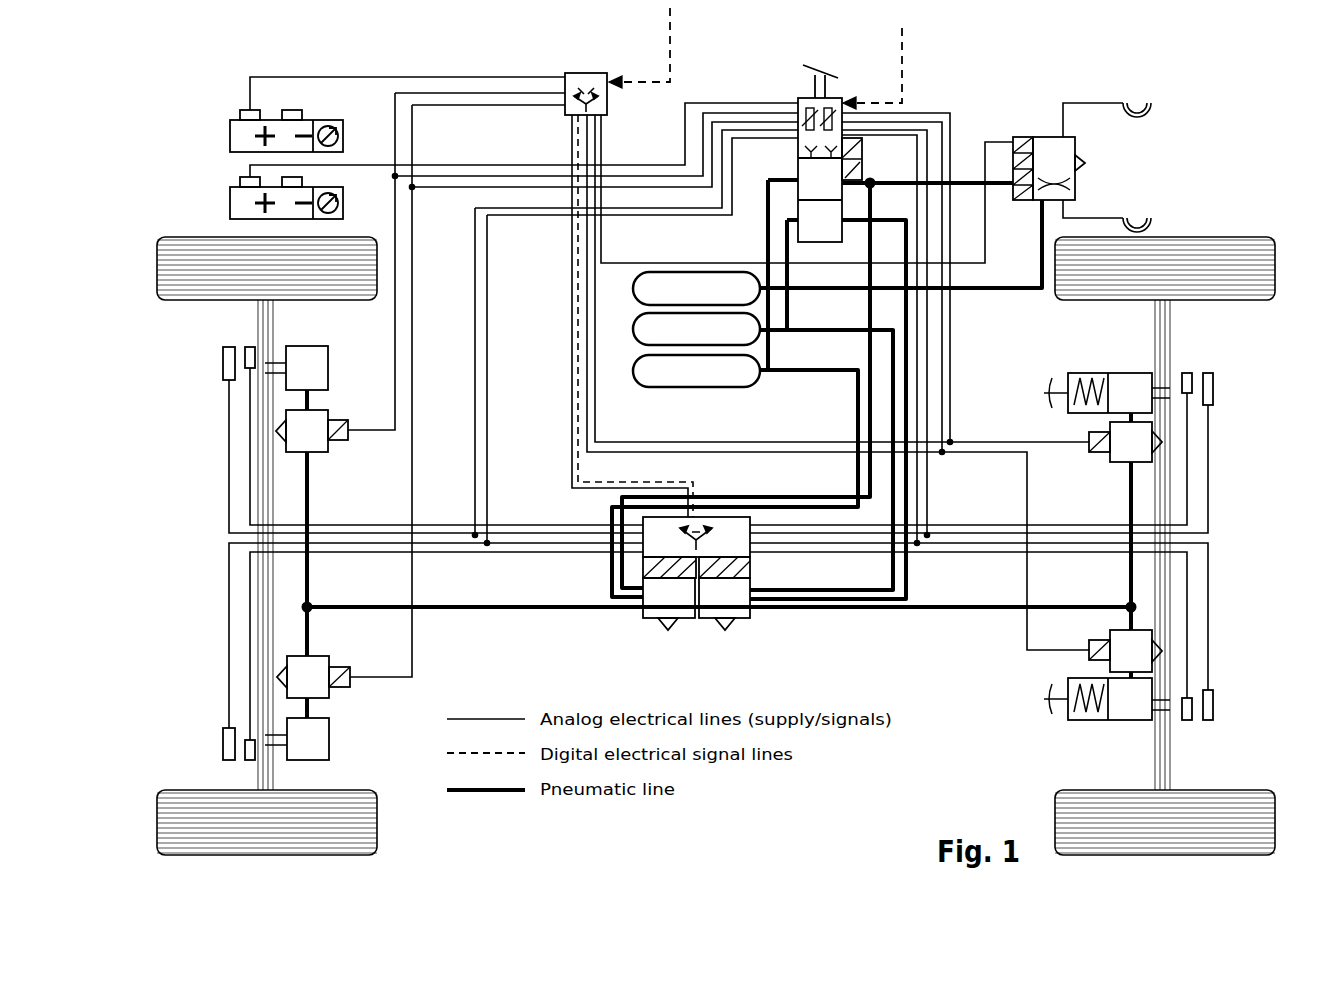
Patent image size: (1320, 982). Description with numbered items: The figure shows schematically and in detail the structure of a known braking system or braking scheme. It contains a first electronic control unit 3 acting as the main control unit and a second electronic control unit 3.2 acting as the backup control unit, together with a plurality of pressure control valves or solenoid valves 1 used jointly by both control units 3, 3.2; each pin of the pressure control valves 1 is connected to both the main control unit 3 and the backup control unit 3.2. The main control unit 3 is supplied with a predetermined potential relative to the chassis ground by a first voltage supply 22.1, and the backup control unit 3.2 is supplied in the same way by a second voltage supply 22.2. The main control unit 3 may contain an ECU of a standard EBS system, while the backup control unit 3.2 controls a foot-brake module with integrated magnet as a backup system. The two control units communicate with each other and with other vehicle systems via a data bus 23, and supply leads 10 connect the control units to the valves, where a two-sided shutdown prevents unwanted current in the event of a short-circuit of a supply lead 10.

The pressure control valves 1 is at (290, 466).
The first electronic control unit 3 is at (616, 93).
The second electronic control unit 3.2 is at (852, 100).
The supply leads 10 is at (398, 483).
The first voltage supply 22.1 is at (226, 136).
The second voltage supply 22.2 is at (226, 203).
The data bus 23 is at (892, 33).